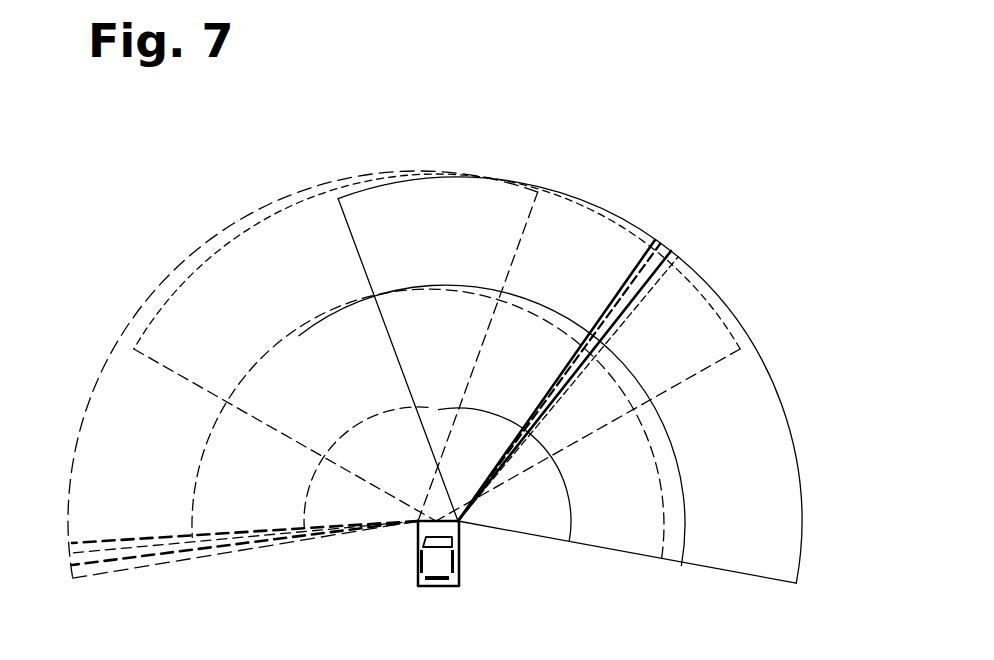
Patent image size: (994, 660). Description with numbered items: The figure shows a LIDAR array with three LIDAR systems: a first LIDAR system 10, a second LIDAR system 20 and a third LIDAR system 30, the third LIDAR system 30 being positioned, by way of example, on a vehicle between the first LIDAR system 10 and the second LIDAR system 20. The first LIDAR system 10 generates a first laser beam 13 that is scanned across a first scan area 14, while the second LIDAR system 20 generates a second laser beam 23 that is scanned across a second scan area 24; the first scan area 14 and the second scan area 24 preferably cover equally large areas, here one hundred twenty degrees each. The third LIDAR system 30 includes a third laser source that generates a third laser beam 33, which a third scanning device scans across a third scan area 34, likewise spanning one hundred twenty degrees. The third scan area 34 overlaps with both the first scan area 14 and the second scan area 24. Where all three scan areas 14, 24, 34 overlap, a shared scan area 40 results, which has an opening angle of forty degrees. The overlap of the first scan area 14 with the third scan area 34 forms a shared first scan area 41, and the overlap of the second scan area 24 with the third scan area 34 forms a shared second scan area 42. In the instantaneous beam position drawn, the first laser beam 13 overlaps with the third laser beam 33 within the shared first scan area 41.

The first LIDAR system 10 is at (459, 522).
The first laser beam 13 is at (517, 452).
The first scan area 14 is at (632, 221).
The second LIDAR system 20 is at (419, 521).
The second laser beam 23 is at (165, 538).
The second scan area 24 is at (288, 199).
The third LIDAR system 30 is at (440, 588).
The third laser beam 33 is at (500, 438).
The third scan area 34 is at (587, 197).
The shared scan area 40 is at (452, 255).
The shared first scan area 41 is at (675, 355).
The shared second scan area 42 is at (277, 318).